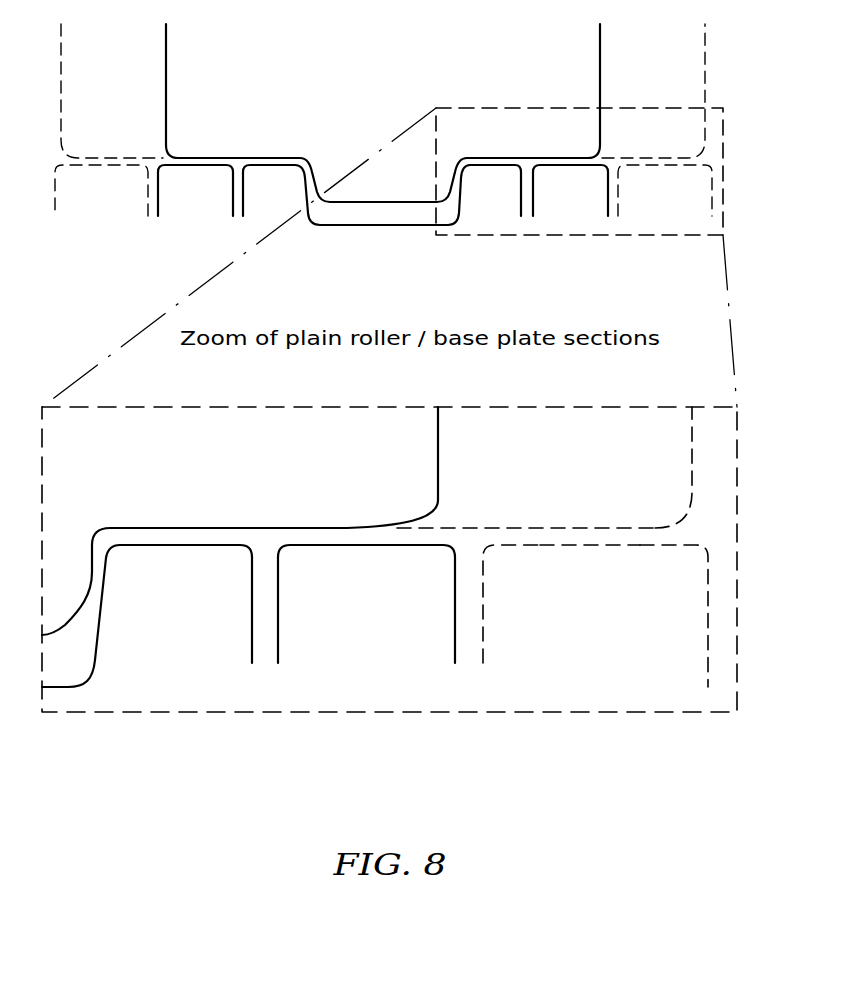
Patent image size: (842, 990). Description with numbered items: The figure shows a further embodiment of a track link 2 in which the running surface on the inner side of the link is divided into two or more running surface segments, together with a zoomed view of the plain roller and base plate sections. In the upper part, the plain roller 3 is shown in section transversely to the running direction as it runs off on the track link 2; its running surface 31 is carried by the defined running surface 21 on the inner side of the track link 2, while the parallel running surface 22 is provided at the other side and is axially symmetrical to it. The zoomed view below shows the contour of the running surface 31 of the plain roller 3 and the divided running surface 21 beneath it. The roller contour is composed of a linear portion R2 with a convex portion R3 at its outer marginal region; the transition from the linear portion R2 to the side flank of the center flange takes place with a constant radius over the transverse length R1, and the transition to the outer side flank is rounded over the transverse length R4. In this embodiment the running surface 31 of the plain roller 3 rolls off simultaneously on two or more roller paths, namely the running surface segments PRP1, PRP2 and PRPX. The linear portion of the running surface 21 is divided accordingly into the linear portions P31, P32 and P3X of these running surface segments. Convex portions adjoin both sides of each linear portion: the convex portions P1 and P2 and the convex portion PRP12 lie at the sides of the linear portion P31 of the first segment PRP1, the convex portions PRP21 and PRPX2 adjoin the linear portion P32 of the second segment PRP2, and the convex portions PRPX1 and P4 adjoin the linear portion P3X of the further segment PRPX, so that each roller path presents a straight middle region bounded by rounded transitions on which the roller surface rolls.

The plain roller 3 is at (349, 91).
The running surface 31 is at (528, 157).
The track link 2 is at (360, 271).
The running surface 21 is at (457, 247).
The running surface 22 is at (308, 247).
The transition length R1 is at (92, 538).
The linear portion R2 is at (222, 527).
The convex portion R3 is at (627, 525).
The rounding length R4 is at (684, 525).
The convex portion P1 is at (116, 553).
The convex portion P2 is at (148, 549).
The linear portion P31 is at (217, 548).
The convex portion PRP12 is at (245, 549).
The running surface segment PRP1 is at (147, 618).
The convex portion PRP21 is at (284, 549).
The linear portion P32 is at (364, 548).
The convex portion PRPX2 is at (451, 548).
The running surface segment PRP2 is at (366, 617).
The convex portion PRPX1 is at (491, 548).
The linear portion P3X is at (583, 548).
The convex portion P4 is at (701, 549).
The running surface segment PRPX is at (595, 616).